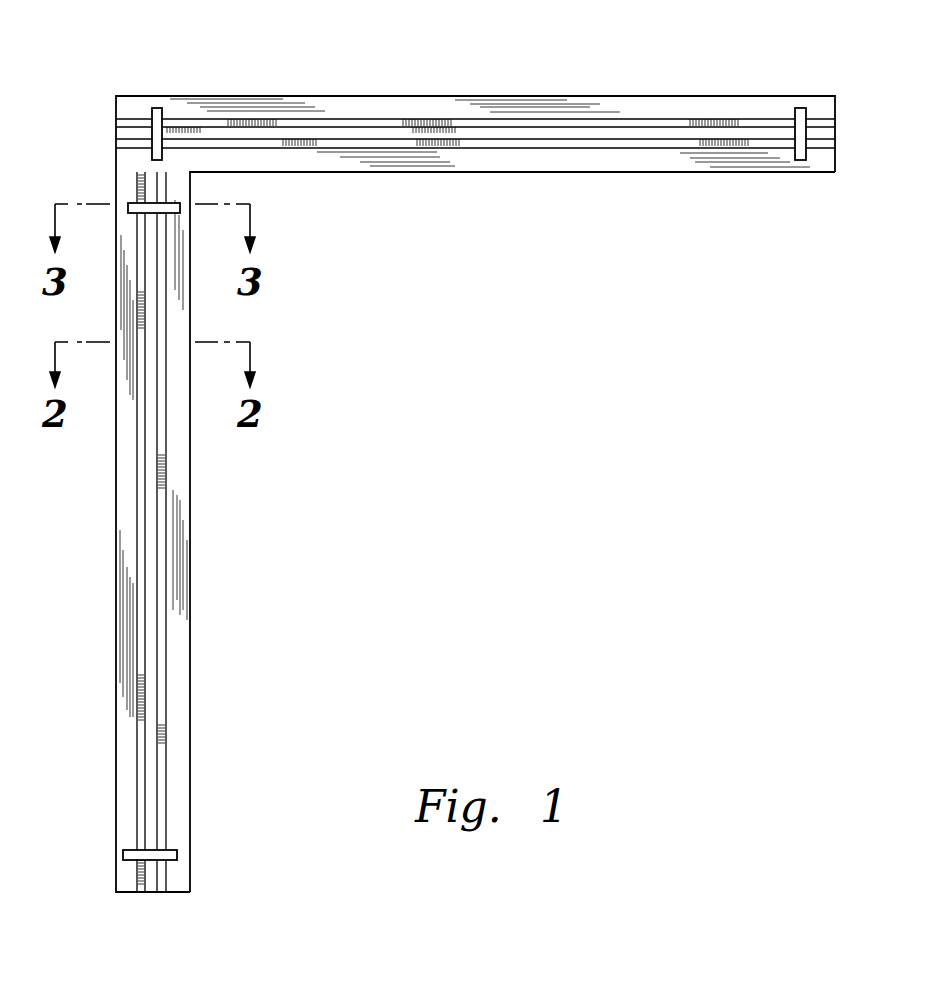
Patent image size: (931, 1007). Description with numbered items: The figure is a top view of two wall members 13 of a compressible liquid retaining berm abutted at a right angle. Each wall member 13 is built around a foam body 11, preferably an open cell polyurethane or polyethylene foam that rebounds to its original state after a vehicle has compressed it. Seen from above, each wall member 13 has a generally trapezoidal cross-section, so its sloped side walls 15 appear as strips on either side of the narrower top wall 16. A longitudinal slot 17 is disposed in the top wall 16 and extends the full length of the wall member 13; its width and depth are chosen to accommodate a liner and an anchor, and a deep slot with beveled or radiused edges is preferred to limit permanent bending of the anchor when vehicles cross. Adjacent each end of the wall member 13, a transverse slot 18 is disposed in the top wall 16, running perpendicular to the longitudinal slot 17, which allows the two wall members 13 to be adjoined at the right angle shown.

The foam body 11 is at (648, 107).
The wall member 13 is at (623, 172).
The sloped side walls 15 is at (373, 108).
The top wall 16 is at (392, 143).
The longitudinal slot 17 is at (535, 132).
The transverse slot 18 is at (162, 115).